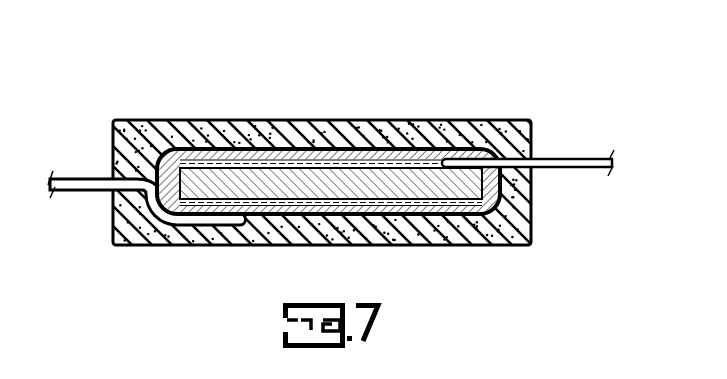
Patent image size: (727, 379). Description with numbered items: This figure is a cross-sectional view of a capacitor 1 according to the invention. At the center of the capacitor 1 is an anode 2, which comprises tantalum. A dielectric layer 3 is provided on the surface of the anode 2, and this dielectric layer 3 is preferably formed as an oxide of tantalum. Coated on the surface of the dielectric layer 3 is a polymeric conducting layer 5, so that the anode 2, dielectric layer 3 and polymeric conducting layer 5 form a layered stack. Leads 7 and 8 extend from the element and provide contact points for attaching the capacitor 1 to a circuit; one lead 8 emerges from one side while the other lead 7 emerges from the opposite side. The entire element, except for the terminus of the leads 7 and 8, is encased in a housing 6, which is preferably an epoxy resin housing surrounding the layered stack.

The capacitor 1 is at (423, 92).
The anode 2 is at (320, 187).
The dielectric layer 3 is at (215, 160).
The polymeric conducting layer 5 is at (312, 146).
The housing 6 is at (457, 246).
The lead 7 is at (558, 165).
The lead 8 is at (92, 179).